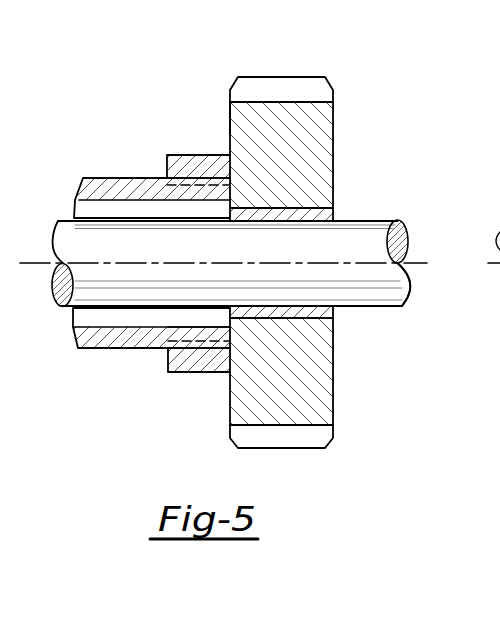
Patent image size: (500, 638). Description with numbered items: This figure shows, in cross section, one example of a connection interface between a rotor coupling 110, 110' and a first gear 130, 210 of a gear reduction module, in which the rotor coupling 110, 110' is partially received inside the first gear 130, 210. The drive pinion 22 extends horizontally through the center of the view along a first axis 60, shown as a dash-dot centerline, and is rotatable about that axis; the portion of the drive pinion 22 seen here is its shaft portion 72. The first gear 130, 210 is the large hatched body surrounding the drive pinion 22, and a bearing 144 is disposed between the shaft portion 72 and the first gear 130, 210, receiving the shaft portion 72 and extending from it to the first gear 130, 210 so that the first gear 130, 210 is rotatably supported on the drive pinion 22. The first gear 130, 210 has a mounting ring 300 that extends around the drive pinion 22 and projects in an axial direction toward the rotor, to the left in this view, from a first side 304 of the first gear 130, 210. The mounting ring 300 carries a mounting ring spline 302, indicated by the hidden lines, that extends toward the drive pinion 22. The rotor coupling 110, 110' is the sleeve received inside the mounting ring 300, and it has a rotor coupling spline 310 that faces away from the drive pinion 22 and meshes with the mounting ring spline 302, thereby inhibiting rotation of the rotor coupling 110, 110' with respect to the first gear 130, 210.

The drive pinion 22 is at (269, 257).
The shaft portion 72 is at (398, 242).
The first axis 60 is at (418, 266).
The rotor coupling 110 is at (151, 220).
The rotor coupling 110' is at (151, 220).
The first gear 130 is at (357, 262).
The first gear 210 is at (333, 140).
The bearing 144 is at (333, 215).
The mounting ring 300 is at (201, 372).
The mounting ring spline 302 is at (178, 328).
The first side 304 is at (230, 112).
The rotor coupling spline 310 is at (178, 328).